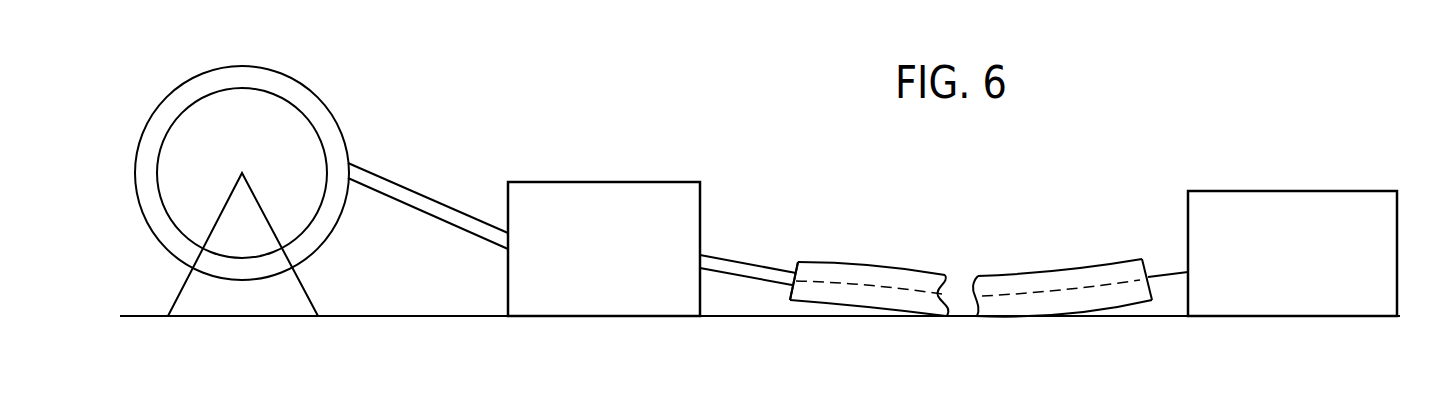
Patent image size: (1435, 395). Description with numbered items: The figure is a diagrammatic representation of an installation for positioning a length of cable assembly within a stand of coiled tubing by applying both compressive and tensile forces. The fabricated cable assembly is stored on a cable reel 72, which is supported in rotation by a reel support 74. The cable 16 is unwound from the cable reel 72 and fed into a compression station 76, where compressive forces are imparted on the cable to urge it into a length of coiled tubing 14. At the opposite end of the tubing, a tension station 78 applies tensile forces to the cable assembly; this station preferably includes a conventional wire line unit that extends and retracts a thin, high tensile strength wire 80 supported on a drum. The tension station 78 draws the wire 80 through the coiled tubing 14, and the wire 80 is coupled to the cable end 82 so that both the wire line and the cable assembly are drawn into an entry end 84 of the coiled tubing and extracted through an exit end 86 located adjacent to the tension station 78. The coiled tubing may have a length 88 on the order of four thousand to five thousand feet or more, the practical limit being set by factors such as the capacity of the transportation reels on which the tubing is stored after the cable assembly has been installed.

The cable reel 72 is at (188, 82).
The reel support 74 is at (180, 295).
The cable 16 is at (387, 180).
The compression station 76 is at (587, 181).
The tension station 78 is at (1265, 191).
The coiled tubing 14 is at (808, 307).
The cable end 82 is at (857, 288).
The entry end 84 is at (797, 261).
The exit end 86 is at (1145, 267).
The wire 80 is at (1173, 275).
The length 88 is at (1142, 187).